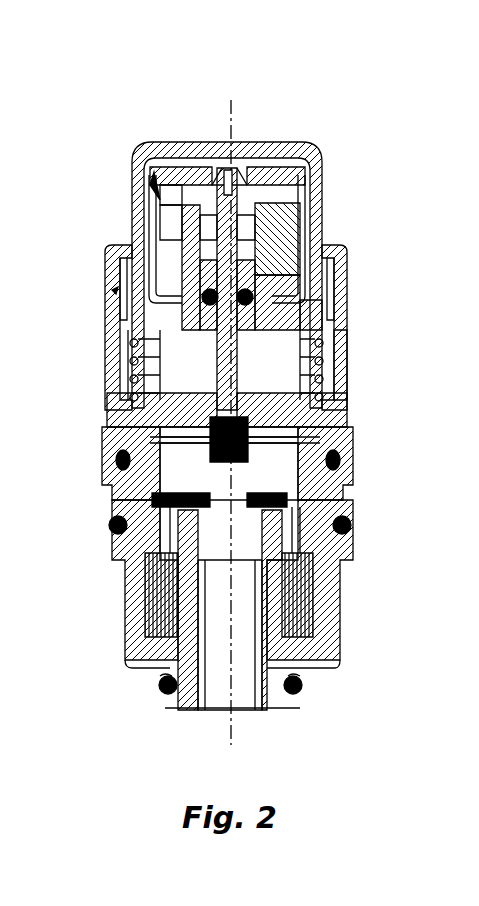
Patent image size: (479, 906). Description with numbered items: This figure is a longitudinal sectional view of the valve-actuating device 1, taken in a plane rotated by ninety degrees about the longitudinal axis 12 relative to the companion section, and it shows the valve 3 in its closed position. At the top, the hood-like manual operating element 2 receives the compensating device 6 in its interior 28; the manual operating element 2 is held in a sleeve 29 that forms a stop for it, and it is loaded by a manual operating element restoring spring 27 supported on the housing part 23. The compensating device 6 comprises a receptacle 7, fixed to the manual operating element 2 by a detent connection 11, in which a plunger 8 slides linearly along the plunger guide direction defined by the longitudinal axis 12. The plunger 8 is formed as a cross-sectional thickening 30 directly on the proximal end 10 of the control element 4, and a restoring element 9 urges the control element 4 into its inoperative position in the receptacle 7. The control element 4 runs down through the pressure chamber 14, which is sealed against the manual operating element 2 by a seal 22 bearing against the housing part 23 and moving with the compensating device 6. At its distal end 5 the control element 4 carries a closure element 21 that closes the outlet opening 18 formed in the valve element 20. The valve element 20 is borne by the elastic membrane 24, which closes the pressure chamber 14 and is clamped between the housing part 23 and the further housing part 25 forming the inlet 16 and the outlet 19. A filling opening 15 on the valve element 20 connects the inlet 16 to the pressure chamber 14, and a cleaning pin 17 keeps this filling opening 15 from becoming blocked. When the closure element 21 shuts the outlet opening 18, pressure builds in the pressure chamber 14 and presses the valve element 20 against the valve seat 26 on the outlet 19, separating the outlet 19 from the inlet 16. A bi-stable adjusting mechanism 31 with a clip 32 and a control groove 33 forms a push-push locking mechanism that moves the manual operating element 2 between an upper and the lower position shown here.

The valve-actuating device 1 is at (286, 50).
The manual operating element 2 is at (300, 227).
The valve 3 is at (348, 458).
The control element 4 is at (130, 387).
The distal end 5 is at (310, 400).
The compensating device 6 is at (325, 267).
The receptacle 7 is at (110, 322).
The plunger 8 is at (340, 330).
The restoring element 9 is at (333, 363).
The proximal end 10 is at (110, 340).
The detent connection 11 is at (252, 140).
The longitudinal axis 12 is at (231, 730).
The pressure chamber 14 is at (310, 437).
The filling opening 15 is at (337, 560).
The inlet 16 is at (347, 530).
The cleaning pin 17 is at (313, 510).
The outlet opening 18 is at (130, 597).
The outlet 19 is at (160, 660).
The valve element 20 is at (247, 540).
The closure element 21 is at (113, 432).
The seal 22 is at (300, 247).
The housing part 23 is at (300, 200).
The elastic membrane 24 is at (110, 503).
The further housing part 25 is at (140, 663).
The valve seat 26 is at (175, 526).
The manual operating element restoring spring 27 is at (340, 338).
The interior 28 is at (150, 172).
The sleeve 29 is at (348, 290).
The cross-sectional thickening 30 is at (216, 175).
The bi-stable adjusting mechanism 31 is at (112, 290).
The clip 32 is at (143, 218).
The control groove 33 is at (300, 313).